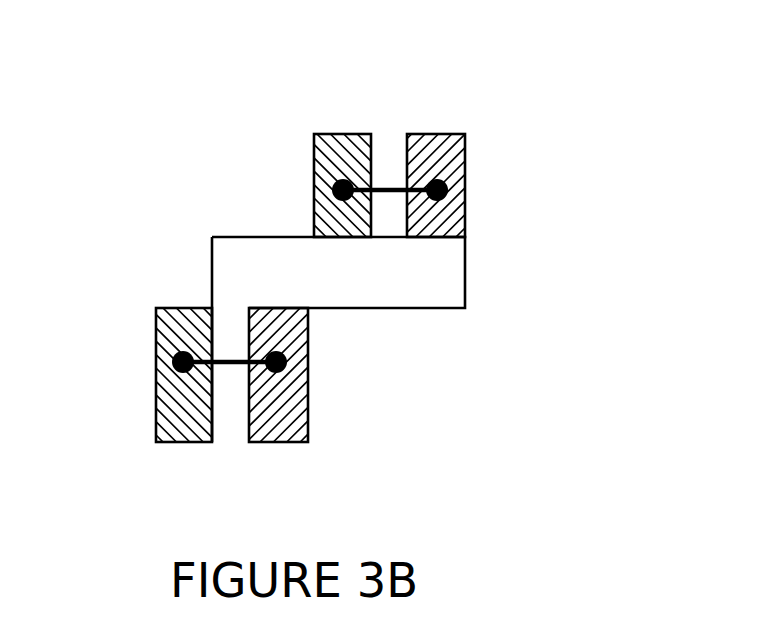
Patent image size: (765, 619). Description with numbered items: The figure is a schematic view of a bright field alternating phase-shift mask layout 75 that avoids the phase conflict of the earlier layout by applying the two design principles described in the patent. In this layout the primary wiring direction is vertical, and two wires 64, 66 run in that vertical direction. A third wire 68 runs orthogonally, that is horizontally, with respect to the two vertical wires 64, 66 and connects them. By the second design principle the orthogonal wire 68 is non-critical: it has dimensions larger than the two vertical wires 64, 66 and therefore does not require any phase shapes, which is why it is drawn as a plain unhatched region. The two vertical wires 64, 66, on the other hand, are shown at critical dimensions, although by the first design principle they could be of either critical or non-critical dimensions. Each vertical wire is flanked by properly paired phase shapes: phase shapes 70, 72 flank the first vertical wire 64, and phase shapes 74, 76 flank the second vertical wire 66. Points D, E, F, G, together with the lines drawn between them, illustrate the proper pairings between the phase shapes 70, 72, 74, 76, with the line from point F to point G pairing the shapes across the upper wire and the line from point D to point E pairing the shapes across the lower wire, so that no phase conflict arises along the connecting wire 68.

The bright field AltPSM layout 75 is at (460, 102).
The third wire 68 is at (227, 253).
The wire 64 is at (374, 192).
The wire 66 is at (218, 362).
The phase shape 70 is at (326, 222).
The phase shape 72 is at (465, 238).
The phase shape 74 is at (172, 405).
The phase shape 76 is at (268, 314).
The point D is at (173, 350).
The point E is at (288, 362).
The point F is at (338, 186).
The point G is at (448, 190).